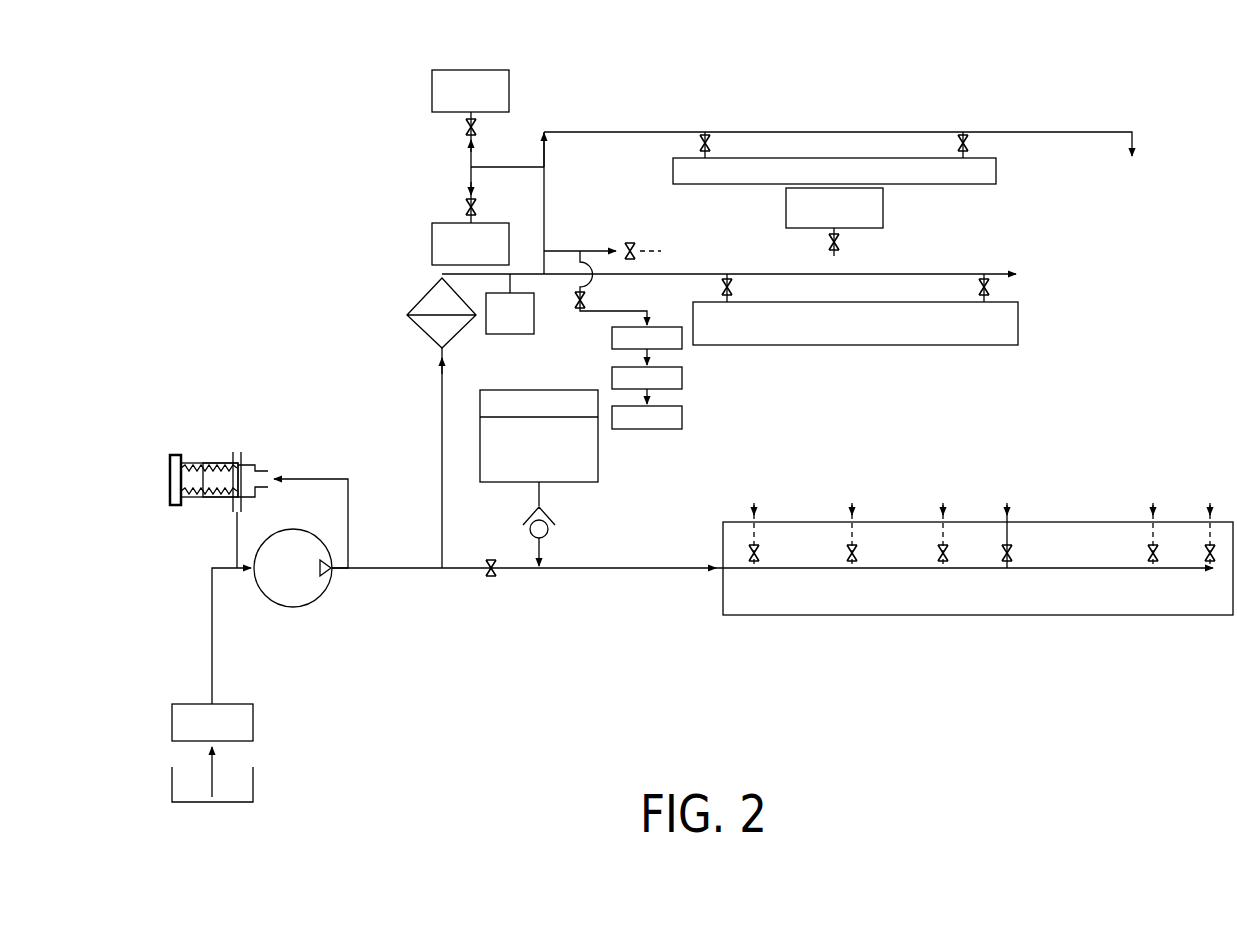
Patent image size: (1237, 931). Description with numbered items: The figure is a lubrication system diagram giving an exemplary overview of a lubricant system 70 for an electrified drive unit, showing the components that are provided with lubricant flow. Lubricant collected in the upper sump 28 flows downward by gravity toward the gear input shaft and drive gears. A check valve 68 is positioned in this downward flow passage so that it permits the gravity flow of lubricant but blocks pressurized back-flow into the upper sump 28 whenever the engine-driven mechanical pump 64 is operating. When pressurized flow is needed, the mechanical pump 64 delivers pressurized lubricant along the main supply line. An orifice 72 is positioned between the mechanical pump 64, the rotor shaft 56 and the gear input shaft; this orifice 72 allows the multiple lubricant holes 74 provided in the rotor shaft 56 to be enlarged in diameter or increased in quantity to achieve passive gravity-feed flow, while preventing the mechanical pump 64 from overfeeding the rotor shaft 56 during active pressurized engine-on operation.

The lubricant system 70 is at (1007, 94).
The upper sump 28 is at (553, 462).
The check valve 68 is at (548, 533).
The orifice 72 is at (491, 577).
The engine-driven mechanical pump 64 is at (307, 580).
The rotor shaft 56 is at (905, 532).
The lubricant holes 74 is at (759, 556).